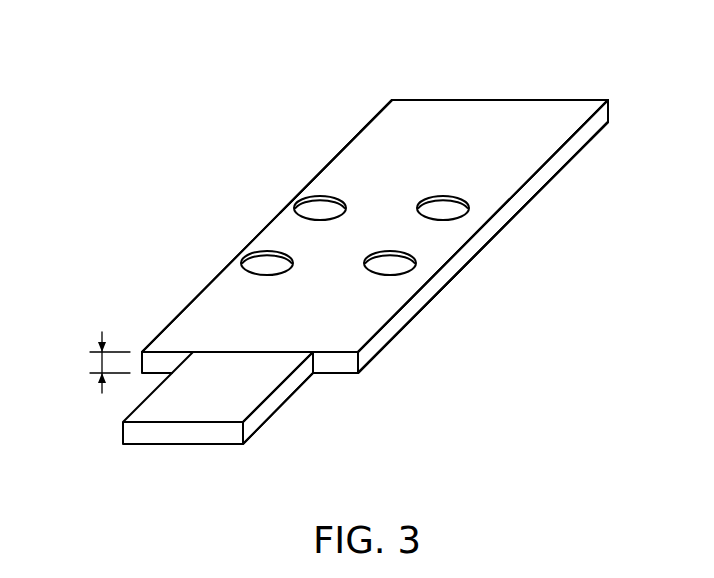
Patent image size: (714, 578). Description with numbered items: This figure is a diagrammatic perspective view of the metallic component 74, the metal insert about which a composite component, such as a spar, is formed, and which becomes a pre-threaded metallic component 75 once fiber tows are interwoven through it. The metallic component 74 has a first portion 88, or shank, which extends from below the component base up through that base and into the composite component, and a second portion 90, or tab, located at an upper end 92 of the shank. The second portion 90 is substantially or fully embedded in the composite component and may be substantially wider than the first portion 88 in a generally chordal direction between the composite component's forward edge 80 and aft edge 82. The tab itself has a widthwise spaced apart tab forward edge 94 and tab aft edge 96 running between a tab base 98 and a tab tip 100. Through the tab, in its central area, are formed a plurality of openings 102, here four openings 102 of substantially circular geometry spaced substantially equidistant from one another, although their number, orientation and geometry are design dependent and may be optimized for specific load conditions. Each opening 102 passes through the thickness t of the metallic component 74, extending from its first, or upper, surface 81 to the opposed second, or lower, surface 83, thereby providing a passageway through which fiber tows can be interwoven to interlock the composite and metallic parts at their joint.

The metallic component 74 is at (295, 60).
The pre-threaded metallic component 75 is at (122, 433).
The forward edge 80 is at (178, 315).
The first surface 81 is at (448, 113).
The aft edge 82 is at (520, 207).
The second surface 83 is at (556, 186).
The first portion 88 is at (290, 393).
The second portion 90 is at (572, 113).
The upper end 92 is at (405, 133).
The tab forward edge 94 is at (333, 157).
The tab aft edge 96 is at (478, 247).
The tab base 98 is at (345, 367).
The tab tip 100 is at (505, 98).
The openings 102 is at (318, 213).
The thickness t is at (102, 363).